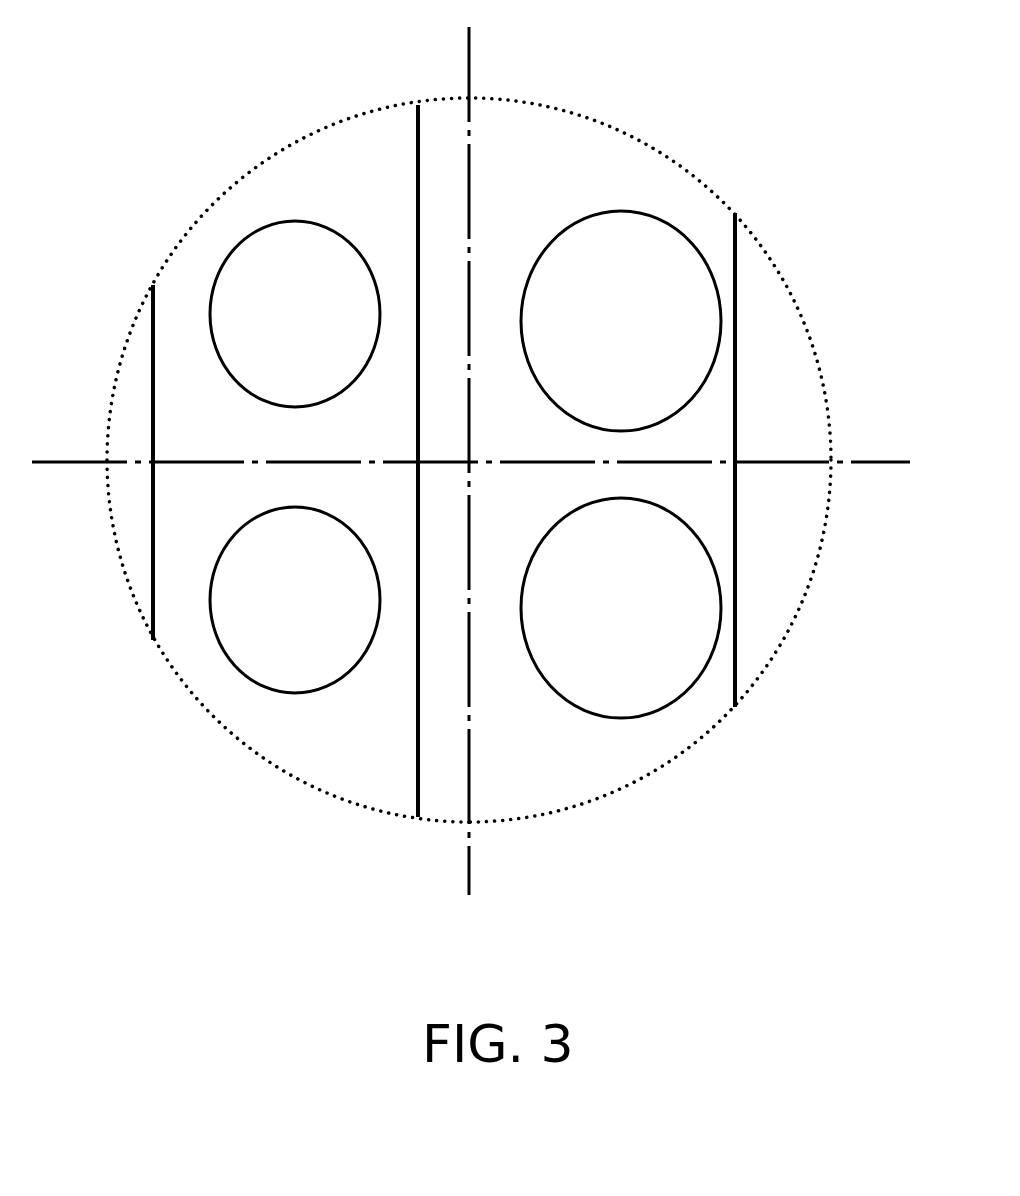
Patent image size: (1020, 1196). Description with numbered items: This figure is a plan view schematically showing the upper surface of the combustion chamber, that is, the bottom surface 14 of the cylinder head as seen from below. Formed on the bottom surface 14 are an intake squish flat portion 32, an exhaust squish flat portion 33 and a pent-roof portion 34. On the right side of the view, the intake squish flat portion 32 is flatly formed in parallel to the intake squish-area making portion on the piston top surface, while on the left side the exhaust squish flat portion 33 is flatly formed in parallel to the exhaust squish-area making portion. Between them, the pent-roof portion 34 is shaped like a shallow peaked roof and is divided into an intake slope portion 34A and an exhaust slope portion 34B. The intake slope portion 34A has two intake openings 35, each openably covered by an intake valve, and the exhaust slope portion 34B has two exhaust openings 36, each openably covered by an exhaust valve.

The bottom surface 14 is at (252, 122).
The intake squish flat portion 32 is at (806, 400).
The exhaust squish flat portion 33 is at (119, 400).
The pent-roof portion 34 is at (215, 213).
The intake slope portion 34A is at (630, 765).
The exhaust slope portion 34B is at (308, 765).
The intake openings 35 is at (548, 380).
The exhaust openings 36 is at (330, 380).